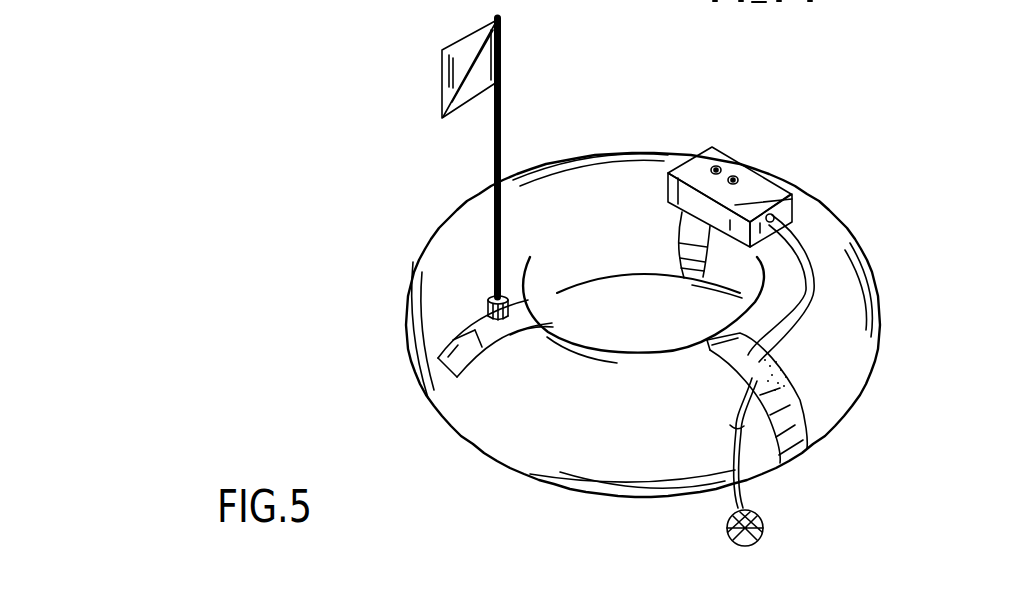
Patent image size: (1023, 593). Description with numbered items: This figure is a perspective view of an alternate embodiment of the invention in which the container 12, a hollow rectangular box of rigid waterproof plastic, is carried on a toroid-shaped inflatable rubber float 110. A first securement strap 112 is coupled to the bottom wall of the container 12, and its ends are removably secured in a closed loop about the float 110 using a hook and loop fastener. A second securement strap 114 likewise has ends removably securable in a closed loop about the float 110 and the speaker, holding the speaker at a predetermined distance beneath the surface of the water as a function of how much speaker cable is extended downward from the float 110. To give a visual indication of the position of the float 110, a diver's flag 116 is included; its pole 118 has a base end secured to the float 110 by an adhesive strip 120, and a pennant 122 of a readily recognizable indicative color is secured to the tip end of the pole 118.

The toroid-shaped inflatable rubber float 110 is at (835, 267).
The first securement strap 112 is at (680, 240).
The second securement strap 114 is at (806, 456).
The diver's flag 116 is at (500, 137).
The pole 118 is at (493, 262).
The adhesive strip 120 is at (463, 337).
The pennant 122 is at (441, 66).
The container 12 is at (738, 170).